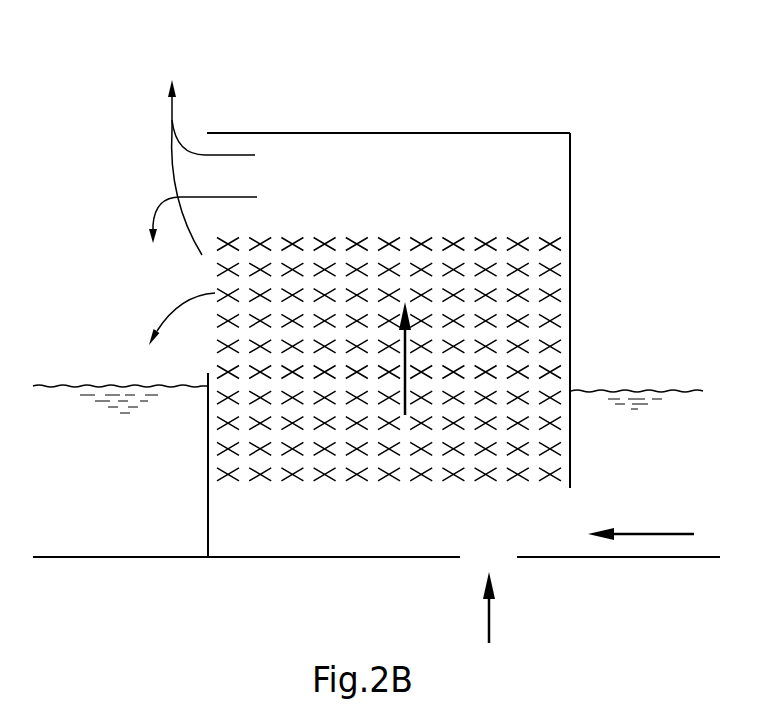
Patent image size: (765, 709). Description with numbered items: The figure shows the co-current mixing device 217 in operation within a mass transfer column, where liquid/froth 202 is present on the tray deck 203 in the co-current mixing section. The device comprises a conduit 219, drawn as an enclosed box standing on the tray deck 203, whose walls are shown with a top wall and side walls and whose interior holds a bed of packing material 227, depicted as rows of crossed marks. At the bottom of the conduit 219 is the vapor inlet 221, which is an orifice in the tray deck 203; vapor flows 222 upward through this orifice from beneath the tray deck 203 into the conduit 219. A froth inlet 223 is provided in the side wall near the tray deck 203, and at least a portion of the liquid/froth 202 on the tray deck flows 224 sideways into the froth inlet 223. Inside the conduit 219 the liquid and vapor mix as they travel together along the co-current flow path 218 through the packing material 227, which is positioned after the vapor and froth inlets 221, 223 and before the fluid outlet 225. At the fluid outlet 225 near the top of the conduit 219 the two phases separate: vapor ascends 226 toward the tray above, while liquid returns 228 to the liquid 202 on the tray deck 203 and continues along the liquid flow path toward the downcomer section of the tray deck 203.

The liquid/froth 202 is at (657, 392).
The tray deck 203 is at (657, 558).
The co-current mixing device 217 is at (607, 73).
The co-current vapor-liquid flow path 218 is at (407, 360).
The conduit 219 is at (468, 131).
The vapor inlet 221 is at (485, 556).
The vapor flow 222 is at (492, 622).
The froth inlet 223 is at (573, 512).
The liquid/froth flow 224 is at (658, 534).
The fluid outlet 225 is at (125, 183).
The vapor ascent 226 is at (174, 120).
The packing material 227 is at (488, 272).
The liquid return 228 is at (152, 217).